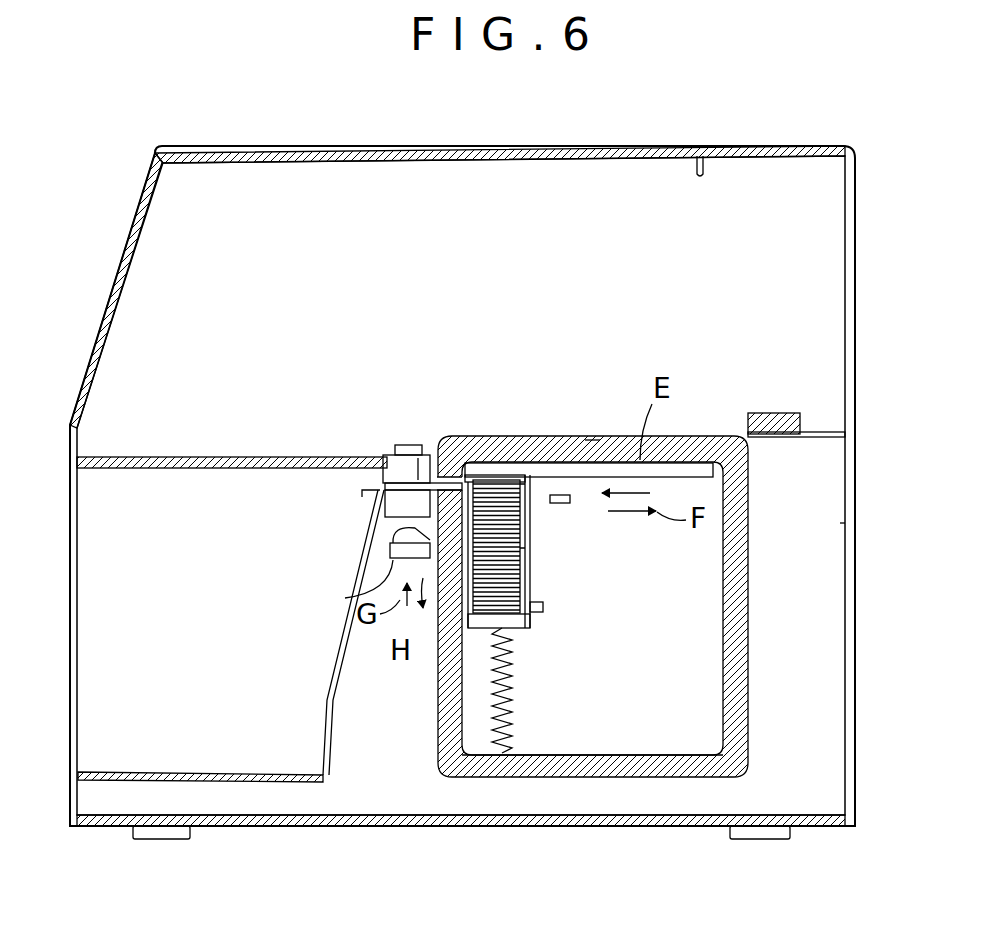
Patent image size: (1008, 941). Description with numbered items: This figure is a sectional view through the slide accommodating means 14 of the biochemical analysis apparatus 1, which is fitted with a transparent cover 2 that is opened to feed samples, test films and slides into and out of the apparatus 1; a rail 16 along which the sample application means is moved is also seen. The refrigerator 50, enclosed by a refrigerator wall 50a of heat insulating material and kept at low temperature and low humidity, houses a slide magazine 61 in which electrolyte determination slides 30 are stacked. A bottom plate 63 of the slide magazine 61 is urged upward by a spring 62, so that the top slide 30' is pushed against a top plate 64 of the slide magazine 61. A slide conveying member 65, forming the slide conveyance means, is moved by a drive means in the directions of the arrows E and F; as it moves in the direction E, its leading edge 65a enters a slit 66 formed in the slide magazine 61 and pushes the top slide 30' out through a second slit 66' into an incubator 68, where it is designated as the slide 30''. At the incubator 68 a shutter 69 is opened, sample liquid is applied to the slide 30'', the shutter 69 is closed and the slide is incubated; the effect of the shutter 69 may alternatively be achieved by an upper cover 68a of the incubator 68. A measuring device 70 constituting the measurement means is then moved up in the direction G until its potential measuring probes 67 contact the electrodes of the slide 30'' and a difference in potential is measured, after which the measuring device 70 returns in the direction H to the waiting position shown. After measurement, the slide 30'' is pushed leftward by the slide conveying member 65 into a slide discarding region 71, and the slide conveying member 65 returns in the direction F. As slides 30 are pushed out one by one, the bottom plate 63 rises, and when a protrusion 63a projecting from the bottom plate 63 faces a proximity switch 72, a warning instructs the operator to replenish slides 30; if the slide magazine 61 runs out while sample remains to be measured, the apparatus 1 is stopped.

The biochemical analysis apparatus 1 is at (748, 110).
The transparent cover 2 is at (218, 150).
The slide accommodating means 14 is at (488, 410).
The rail 16 is at (795, 412).
The electrolyte determination slide 30 is at (552, 533).
The top slide 30' is at (510, 497).
The slide in incubator 30'' is at (370, 490).
The refrigerator 50 is at (686, 735).
The refrigerator wall 50a is at (567, 767).
The slide magazine 61 is at (532, 590).
The spring 62 is at (510, 703).
The bottom plate 63 is at (525, 630).
The protrusion 63a is at (545, 607).
The top plate 64 is at (520, 470).
The slide conveying member 65 is at (745, 468).
The leading edge 65a is at (528, 494).
The slit 66 is at (614, 406).
The slit 66' is at (423, 444).
The potential measuring probe 67 is at (395, 540).
The incubator 68 is at (390, 522).
The upper cover 68a is at (413, 446).
The shutter 69 is at (395, 456).
The measuring device 70 is at (345, 598).
The slide discarding region 71 is at (247, 495).
The proximity switch 72 is at (572, 500).